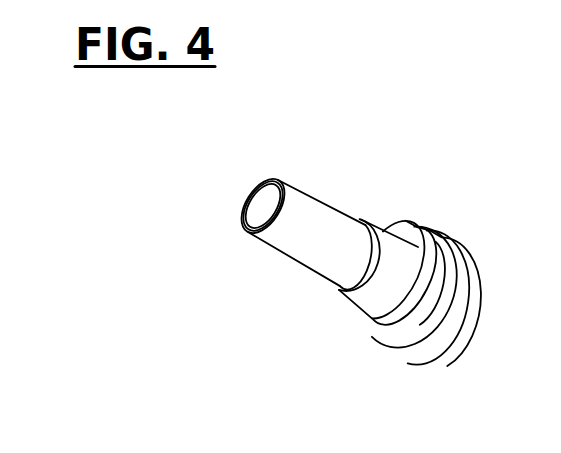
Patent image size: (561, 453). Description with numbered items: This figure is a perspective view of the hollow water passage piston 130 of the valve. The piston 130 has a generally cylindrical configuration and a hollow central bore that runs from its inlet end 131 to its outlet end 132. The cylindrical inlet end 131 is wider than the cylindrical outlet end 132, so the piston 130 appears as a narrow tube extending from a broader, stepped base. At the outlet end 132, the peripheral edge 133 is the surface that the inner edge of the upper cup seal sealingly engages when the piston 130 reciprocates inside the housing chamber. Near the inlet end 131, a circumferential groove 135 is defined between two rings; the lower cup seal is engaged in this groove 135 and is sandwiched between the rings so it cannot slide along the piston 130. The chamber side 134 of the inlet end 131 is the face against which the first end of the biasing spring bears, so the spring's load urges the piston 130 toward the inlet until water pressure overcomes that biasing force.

The water passage piston 130 is at (365, 182).
The inlet end 131 is at (366, 363).
The outlet end 132 is at (248, 243).
The peripheral edge 133 is at (306, 201).
The chamber side 134 is at (366, 330).
The circumferential groove 135 is at (457, 252).